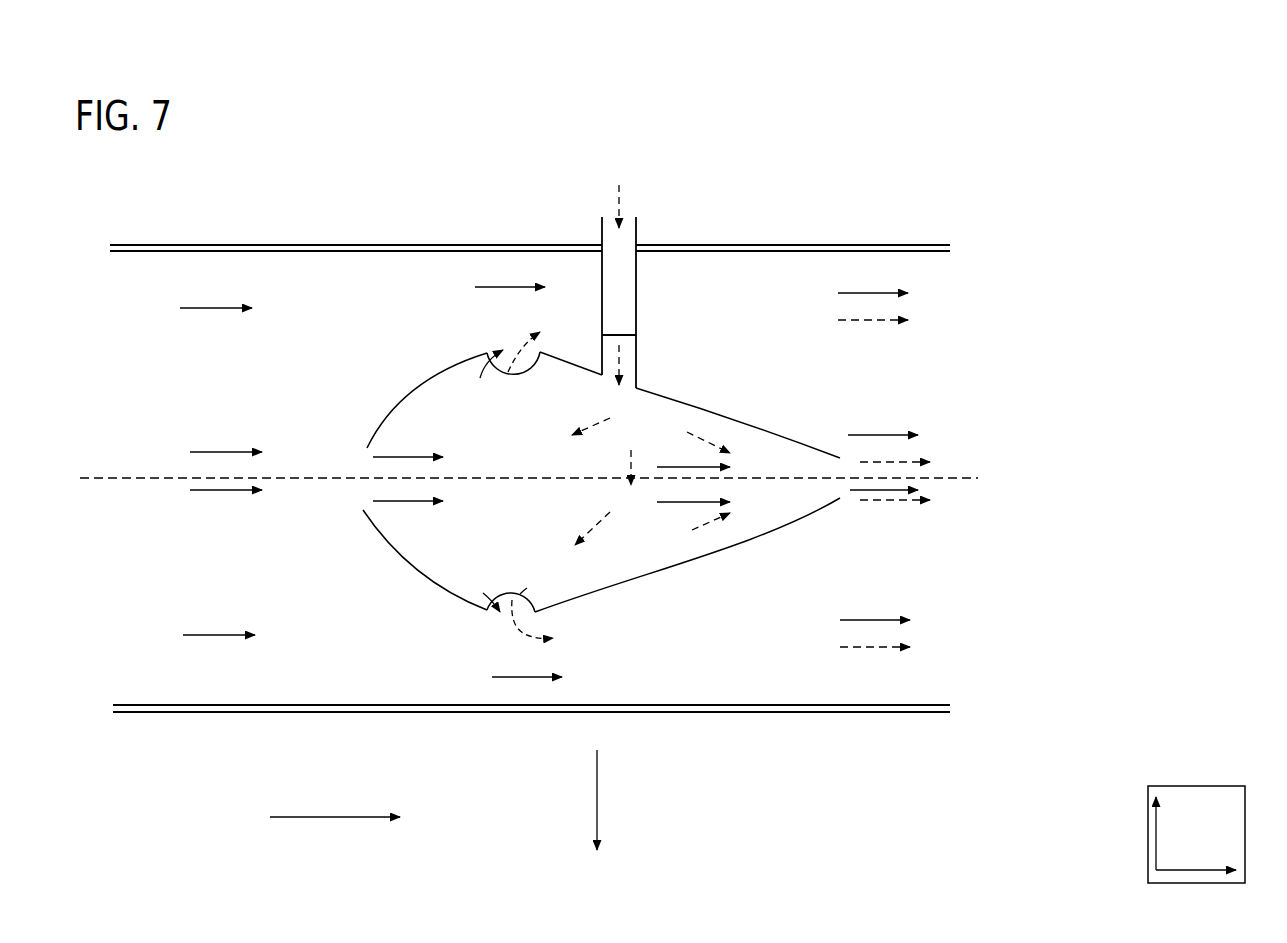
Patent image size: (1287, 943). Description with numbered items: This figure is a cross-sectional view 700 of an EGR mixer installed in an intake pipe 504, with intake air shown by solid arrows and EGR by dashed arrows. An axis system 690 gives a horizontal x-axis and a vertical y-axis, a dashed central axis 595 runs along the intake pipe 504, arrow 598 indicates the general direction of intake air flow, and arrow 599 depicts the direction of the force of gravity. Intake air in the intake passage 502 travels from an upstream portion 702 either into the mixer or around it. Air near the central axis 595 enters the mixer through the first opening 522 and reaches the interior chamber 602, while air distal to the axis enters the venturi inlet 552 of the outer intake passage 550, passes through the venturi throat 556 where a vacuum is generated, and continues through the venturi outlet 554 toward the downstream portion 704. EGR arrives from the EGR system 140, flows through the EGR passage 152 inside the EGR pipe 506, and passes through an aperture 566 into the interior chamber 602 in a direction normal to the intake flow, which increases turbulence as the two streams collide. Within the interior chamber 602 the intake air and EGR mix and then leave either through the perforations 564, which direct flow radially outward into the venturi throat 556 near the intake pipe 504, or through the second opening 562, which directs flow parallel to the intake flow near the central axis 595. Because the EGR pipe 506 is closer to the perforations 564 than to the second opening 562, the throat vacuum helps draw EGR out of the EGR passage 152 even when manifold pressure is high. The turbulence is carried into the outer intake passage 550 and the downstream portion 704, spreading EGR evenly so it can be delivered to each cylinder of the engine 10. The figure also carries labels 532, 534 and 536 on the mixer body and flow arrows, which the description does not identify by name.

The cross-sectional view 700 is at (240, 188).
The intake pipe 504 is at (340, 245).
The EGR system 140 is at (673, 179).
The EGR pipe 506 is at (636, 368).
The EGR passage 152 is at (619, 348).
The upper body surface 532 is at (418, 390).
The upper recirculation flow 536 is at (483, 323).
The perforations 564 is at (507, 377).
The upper downstream surface 534 is at (712, 422).
The aperture 566 is at (632, 397).
The first opening 522 is at (343, 463).
The outer intake passage 550 is at (312, 575).
The venturi throat 556 is at (541, 665).
The second opening 562 is at (840, 498).
The intake passage 502 is at (115, 388).
The upstream portion 702 is at (236, 562).
The downstream portion 704 is at (911, 415).
The interior chamber 602 is at (512, 519).
The venturi inlet 552 is at (436, 644).
The venturi outlet 554 is at (761, 638).
The central axis 595 is at (962, 478).
The engine 10 is at (1104, 491).
The arrow 598 is at (302, 817).
The arrow 599 is at (598, 802).
The axis system 690 is at (1208, 786).